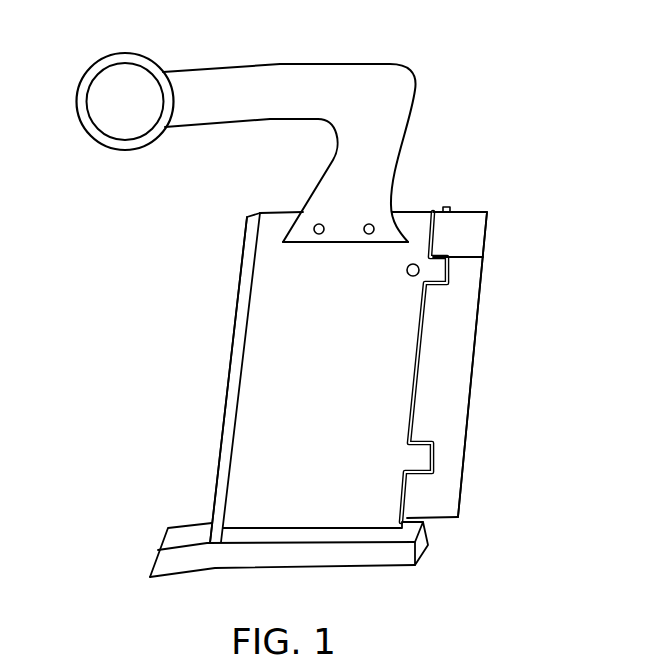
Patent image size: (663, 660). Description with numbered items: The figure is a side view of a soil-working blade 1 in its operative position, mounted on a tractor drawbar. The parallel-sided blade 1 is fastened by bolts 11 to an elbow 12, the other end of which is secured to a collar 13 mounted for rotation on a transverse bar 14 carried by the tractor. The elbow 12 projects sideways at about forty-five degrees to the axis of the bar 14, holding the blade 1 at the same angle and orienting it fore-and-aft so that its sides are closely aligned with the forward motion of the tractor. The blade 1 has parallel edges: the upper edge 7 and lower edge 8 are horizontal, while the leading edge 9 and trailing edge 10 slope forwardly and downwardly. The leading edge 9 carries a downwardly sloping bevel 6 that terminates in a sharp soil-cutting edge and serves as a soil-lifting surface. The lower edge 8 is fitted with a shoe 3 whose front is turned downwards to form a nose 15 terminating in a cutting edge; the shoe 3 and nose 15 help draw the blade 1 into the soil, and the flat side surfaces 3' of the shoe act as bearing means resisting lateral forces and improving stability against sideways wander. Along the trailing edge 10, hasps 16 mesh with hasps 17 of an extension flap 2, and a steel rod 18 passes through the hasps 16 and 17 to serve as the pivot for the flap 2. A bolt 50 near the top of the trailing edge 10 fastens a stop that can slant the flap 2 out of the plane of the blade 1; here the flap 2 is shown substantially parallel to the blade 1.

The blade 1 is at (275, 305).
The extension flap 2 is at (480, 227).
The shoe 3 is at (282, 574).
The flat side surfaces 3' is at (439, 574).
The bevel 6 is at (228, 412).
The upper edge 7 is at (405, 211).
The lower edge 8 is at (353, 531).
The leading edge 9 is at (232, 347).
The trailing edge 10 is at (448, 413).
The bolts 11 is at (325, 223).
The elbow 12 is at (345, 73).
The collar 13 is at (133, 55).
The transverse bar 14 is at (118, 120).
The nose 15 is at (172, 563).
The hasps 16 is at (450, 277).
The hasps 17 is at (445, 232).
The steel rod 18 is at (483, 257).
The bolt 50 is at (410, 277).